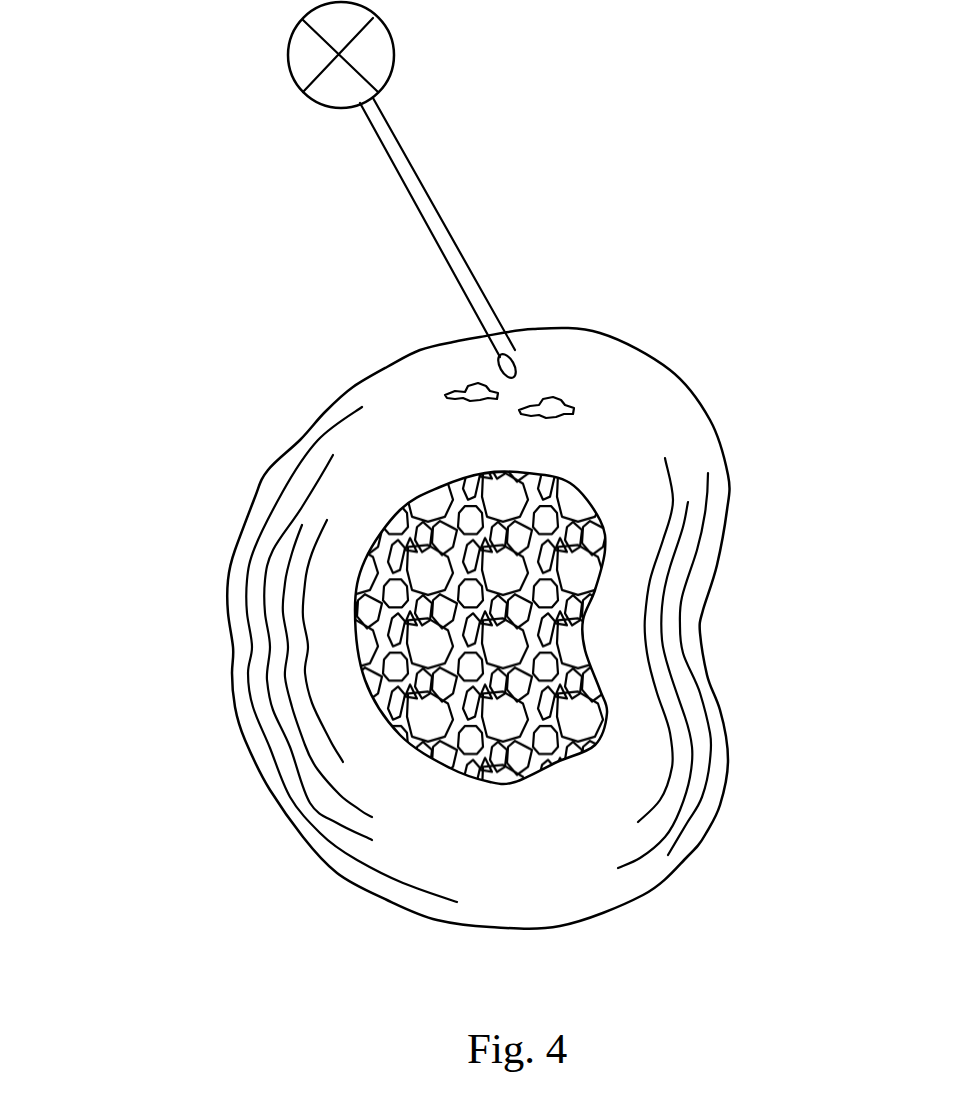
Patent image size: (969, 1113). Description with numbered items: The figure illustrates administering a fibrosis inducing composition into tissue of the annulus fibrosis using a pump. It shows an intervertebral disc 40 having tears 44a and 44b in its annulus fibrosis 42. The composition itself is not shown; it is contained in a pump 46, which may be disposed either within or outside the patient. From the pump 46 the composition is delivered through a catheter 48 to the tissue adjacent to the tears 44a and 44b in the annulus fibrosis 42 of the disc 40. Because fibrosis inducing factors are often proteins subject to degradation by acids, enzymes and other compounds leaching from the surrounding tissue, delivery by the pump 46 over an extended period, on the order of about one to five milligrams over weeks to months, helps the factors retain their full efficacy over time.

The intervertebral disc 40 is at (233, 795).
The annulus fibrosis 42 is at (242, 457).
The tear 44a is at (463, 384).
The tear 44b is at (571, 388).
The pump 46 is at (288, 63).
The catheter 48 is at (437, 203).